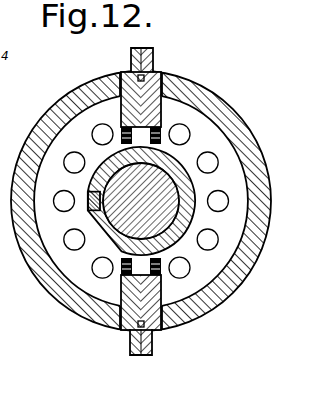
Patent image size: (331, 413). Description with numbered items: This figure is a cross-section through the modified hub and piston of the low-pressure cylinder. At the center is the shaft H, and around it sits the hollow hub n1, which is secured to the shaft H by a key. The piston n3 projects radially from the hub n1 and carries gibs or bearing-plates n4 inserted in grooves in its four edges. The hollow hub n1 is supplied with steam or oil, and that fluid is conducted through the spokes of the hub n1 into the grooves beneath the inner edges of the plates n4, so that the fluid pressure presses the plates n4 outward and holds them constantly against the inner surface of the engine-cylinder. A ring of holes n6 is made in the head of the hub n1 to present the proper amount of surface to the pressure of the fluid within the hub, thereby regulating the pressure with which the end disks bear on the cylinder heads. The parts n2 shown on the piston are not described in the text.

The hollow hub n1 is at (90, 208).
The nuts on key stud n2 is at (122, 136).
The piston n3 is at (152, 210).
The gibs or bearing-plates n4 is at (153, 48).
The holes n6 is at (66, 193).
The shaft H is at (194, 215).